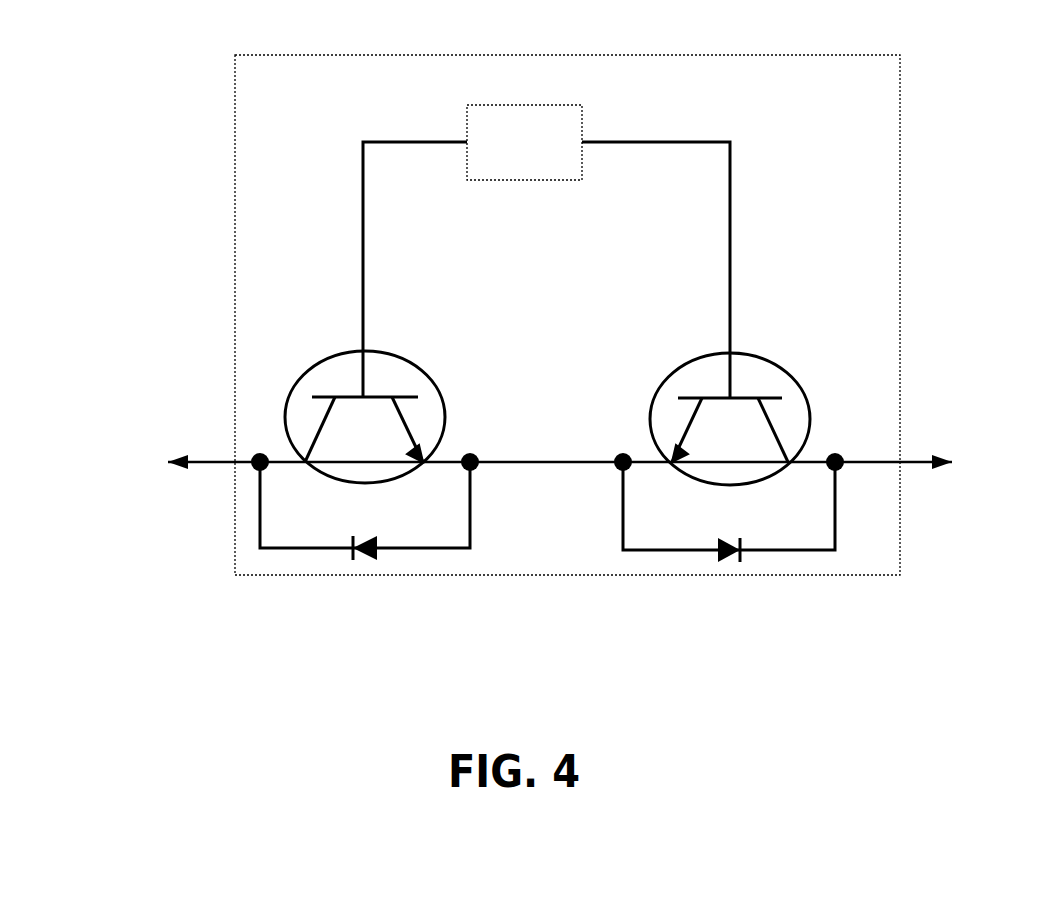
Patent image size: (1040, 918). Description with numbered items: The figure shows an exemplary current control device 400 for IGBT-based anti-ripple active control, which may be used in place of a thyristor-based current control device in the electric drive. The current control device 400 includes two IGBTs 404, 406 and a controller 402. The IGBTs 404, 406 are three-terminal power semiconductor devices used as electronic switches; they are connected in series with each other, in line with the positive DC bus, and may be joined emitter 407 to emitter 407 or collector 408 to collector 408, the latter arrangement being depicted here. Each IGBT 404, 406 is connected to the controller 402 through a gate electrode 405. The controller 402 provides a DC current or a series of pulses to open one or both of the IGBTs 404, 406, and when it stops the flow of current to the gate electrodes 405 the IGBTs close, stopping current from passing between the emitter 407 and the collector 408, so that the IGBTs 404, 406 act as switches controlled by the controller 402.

The current control device 400 is at (1020, 64).
The controller 402 is at (524, 142).
The first IGBT 404 is at (320, 362).
The gate electrode 405 is at (564, 270).
The second IGBT 406 is at (685, 363).
The emitter 407 is at (315, 437).
The collector 408 is at (408, 427).